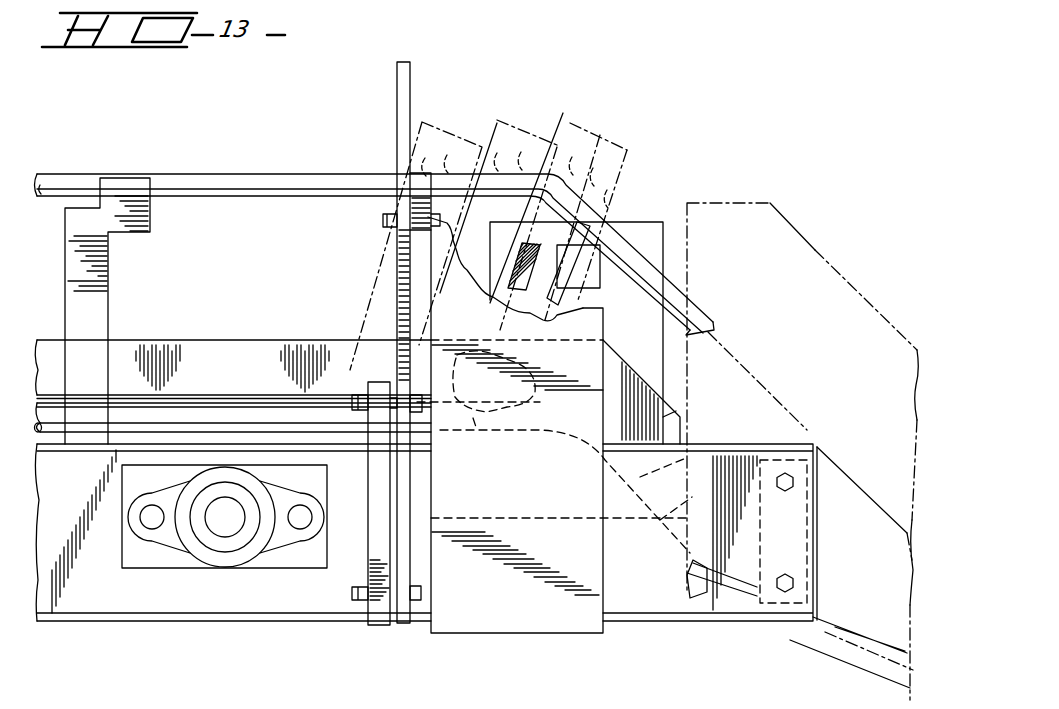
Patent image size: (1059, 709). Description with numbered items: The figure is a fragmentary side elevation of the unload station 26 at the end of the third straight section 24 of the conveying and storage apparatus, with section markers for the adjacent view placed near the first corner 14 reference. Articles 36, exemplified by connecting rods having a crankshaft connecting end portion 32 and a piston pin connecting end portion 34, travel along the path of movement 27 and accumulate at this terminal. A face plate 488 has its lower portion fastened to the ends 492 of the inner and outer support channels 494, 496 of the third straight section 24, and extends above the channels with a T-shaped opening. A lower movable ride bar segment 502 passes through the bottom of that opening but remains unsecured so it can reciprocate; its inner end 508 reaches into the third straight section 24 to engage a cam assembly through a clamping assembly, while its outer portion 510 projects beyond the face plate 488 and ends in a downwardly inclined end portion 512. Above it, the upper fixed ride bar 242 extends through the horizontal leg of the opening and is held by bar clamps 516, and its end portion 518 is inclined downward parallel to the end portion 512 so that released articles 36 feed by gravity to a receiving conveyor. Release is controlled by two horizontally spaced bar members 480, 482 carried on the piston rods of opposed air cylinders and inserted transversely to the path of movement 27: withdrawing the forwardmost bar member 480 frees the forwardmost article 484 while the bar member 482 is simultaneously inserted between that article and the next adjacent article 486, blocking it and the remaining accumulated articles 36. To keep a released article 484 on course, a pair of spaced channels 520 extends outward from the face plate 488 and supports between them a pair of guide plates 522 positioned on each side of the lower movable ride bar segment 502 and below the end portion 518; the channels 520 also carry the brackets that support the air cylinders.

The first corner 14 is at (818, 82).
The third straight section 24 is at (122, 624).
The unload station 26 is at (380, 118).
The path of movement 27 is at (272, 275).
The crankshaft connecting end portion 32 is at (617, 172).
The piston pin connecting end portion 34 is at (515, 397).
The articles 36 is at (517, 130).
The upper fixed ride bar 242 is at (220, 186).
The bar member 480 is at (583, 232).
The bar member 482 is at (540, 328).
The forwardmost article 484 is at (590, 131).
The next adjacent article 486 is at (550, 140).
The face plate 488 is at (405, 88).
The ends 492 is at (350, 573).
The inner support channel 494 is at (236, 603).
The outer support channel 496 is at (226, 563).
The lower movable ride bar segment 502 is at (288, 410).
The inner end 508 is at (190, 397).
The outer portion 510 is at (559, 425).
The downwardly inclined end portion 512 is at (699, 452).
The bar clamps 516 is at (413, 172).
The end portion 518 is at (673, 297).
The channels 520 is at (640, 604).
The guide plates 522 is at (673, 407).